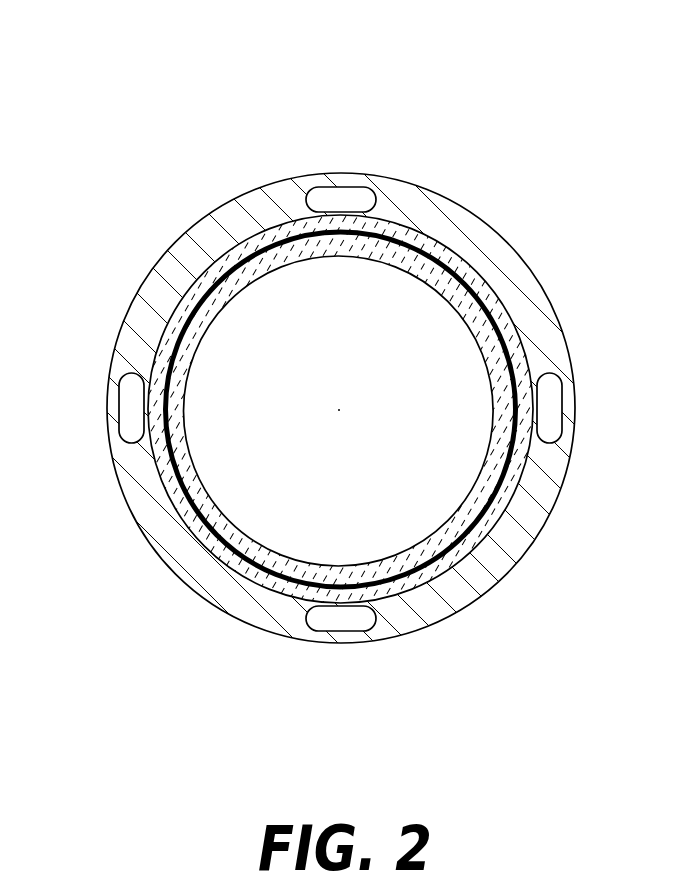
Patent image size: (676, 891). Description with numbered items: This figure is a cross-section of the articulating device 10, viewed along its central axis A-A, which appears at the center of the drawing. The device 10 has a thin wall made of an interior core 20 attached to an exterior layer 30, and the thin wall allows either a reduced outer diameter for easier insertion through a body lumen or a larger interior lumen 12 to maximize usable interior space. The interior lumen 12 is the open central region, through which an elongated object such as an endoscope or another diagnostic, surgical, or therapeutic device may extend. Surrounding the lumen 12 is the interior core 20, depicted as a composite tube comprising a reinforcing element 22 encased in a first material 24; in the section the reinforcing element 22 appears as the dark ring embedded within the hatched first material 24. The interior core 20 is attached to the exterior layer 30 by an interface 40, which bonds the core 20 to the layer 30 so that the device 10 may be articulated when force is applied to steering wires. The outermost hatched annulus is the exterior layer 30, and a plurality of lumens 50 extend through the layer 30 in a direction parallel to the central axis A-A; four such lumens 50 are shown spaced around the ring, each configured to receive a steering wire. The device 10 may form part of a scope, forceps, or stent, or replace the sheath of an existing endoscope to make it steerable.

The articulating device 10 is at (497, 82).
The interior lumen 12 is at (435, 335).
The interior core 20 is at (158, 465).
The reinforcing element 22 is at (460, 597).
The first material 24 is at (500, 512).
The exterior layer 30 is at (147, 547).
The interface 40 is at (222, 612).
The lumens 50 is at (340, 190).
The central axis AA is at (338, 412).